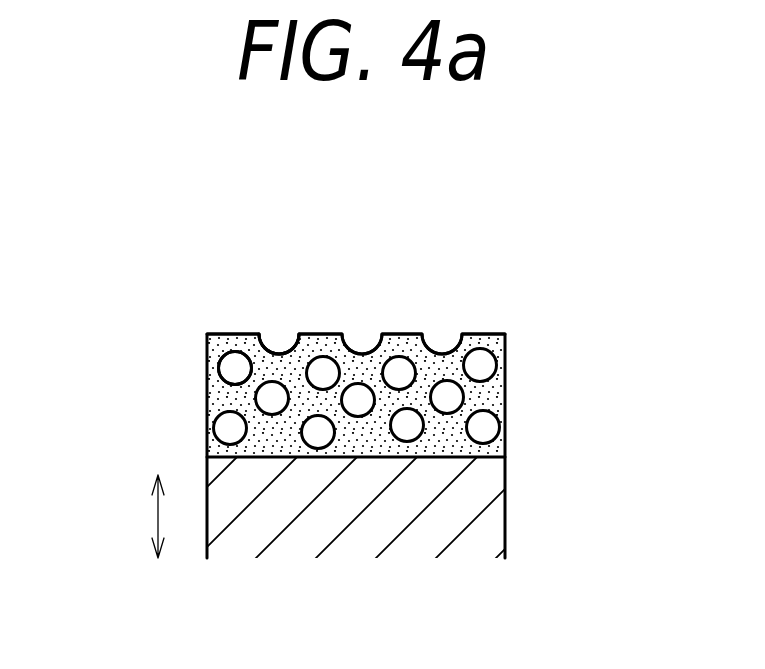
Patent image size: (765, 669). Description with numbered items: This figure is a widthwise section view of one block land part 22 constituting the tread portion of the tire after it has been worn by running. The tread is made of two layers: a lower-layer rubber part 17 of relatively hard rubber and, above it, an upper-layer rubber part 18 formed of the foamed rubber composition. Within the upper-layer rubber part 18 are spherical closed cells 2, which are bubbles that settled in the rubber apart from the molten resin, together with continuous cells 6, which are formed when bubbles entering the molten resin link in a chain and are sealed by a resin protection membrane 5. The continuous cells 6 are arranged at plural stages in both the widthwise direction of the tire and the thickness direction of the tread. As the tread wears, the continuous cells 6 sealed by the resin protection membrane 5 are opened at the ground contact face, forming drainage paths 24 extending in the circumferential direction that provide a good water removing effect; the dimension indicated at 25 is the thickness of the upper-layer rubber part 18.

The spherical closed cell 2 is at (493, 392).
The resin protection membrane 5 is at (222, 355).
The continuous cell 6 is at (233, 370).
The lower-layer rubber part 17 is at (533, 509).
The upper-layer rubber part 18 is at (532, 416).
The block land part 22 is at (431, 292).
The drainage path 24 is at (283, 337).
The thickness of the coating layer 25 is at (158, 512).